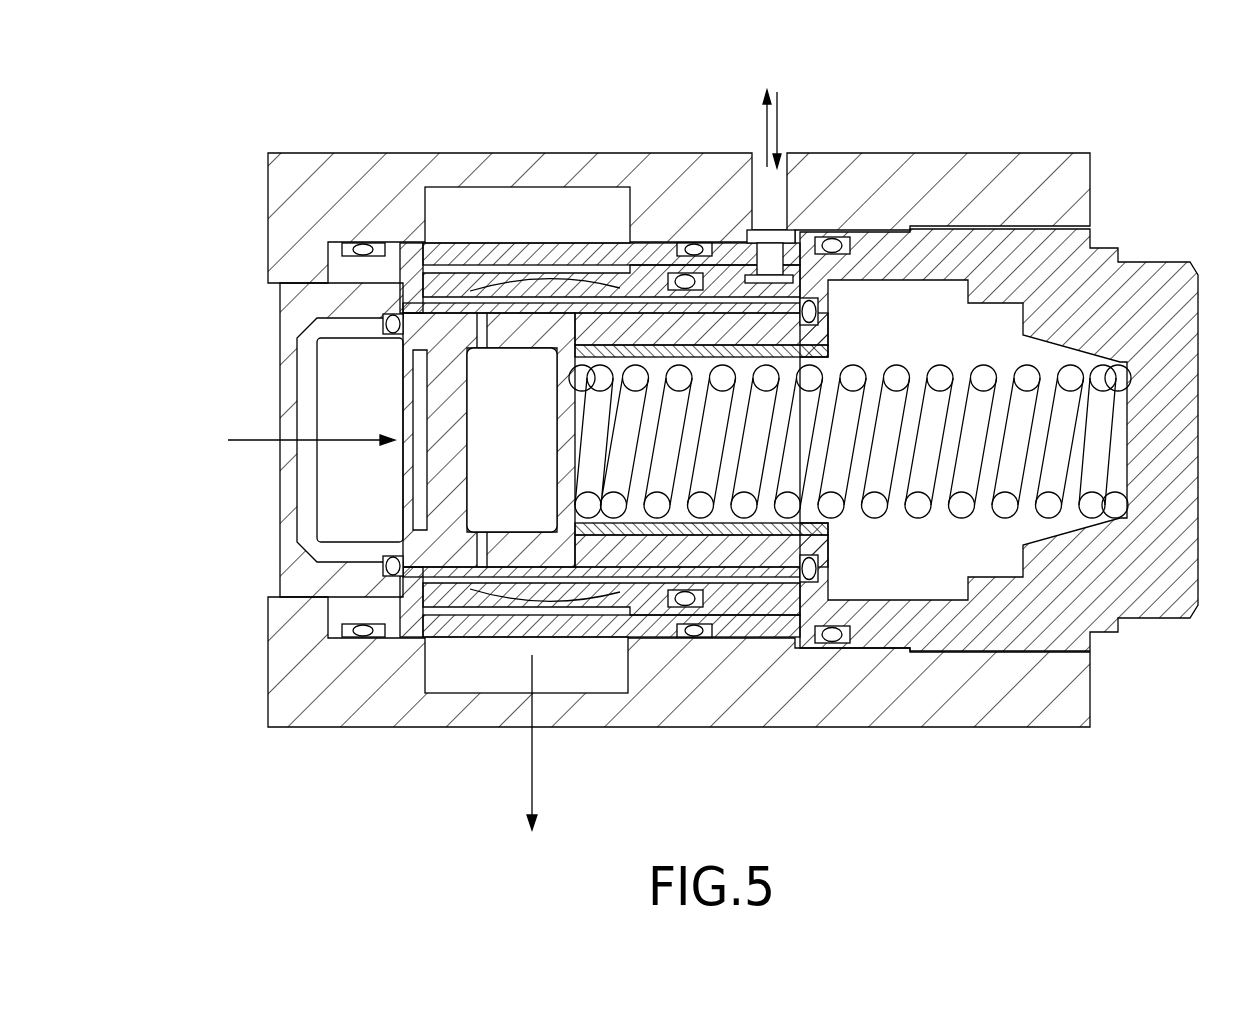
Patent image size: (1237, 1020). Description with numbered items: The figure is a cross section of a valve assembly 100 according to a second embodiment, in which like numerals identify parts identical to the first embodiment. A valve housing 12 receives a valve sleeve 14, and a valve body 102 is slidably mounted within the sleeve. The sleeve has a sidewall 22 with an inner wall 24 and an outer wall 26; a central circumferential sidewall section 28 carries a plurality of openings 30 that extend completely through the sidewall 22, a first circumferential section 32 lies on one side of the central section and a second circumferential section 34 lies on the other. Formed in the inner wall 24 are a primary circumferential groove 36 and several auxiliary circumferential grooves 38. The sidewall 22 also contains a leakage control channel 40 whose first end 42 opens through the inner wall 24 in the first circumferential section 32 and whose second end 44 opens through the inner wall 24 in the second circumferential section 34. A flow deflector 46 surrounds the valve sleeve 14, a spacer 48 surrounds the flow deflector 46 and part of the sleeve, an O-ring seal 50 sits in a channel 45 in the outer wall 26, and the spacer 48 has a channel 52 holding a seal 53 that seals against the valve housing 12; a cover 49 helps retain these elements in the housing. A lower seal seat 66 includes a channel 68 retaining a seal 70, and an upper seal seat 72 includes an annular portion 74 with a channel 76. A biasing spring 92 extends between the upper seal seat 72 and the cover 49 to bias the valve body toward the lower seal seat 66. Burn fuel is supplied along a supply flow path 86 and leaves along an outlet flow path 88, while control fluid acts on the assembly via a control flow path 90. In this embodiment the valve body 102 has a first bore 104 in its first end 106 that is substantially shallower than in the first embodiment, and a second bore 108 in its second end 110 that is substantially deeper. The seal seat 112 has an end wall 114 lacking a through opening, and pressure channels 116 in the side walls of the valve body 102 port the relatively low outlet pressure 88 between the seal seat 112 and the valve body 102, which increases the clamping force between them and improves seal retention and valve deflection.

The valve housing 12 is at (1030, 175).
The valve sleeve 14 is at (615, 283).
The sidewall 22 is at (490, 283).
The inner wall 24 is at (423, 373).
The outer wall 26 is at (430, 265).
The central circumferential sidewall section 28 is at (517, 593).
The openings 30 is at (468, 583).
The first circumferential section 32 is at (437, 597).
The second circumferential section 34 is at (668, 585).
The primary circumferential groove 36 is at (650, 590).
The auxiliary circumferential grooves 38 is at (748, 583).
The leakage control channel 40 is at (537, 300).
The first end 42 is at (432, 592).
The second end 44 is at (613, 590).
The channel 45 is at (655, 285).
The flow deflector 46 is at (440, 278).
The spacer 48 is at (522, 262).
The cover 49 is at (885, 255).
The O-ring seal 50 is at (673, 290).
The channel 52 is at (765, 272).
The seal 53 is at (705, 290).
The lower seal seat 66 is at (333, 573).
The channel 68 is at (333, 630).
The seal 70 is at (393, 558).
The upper seal seat 72 is at (783, 535).
The annular portion 74 is at (827, 570).
The channel 76 is at (827, 593).
The supply flow path 86 is at (247, 437).
The outlet flow path 88 is at (530, 775).
The control flow path 90 is at (767, 111).
The biasing spring 92 is at (963, 508).
The valve assembly 100 is at (845, 120).
The valve body 102 is at (555, 296).
The first bore 104 is at (425, 360).
The first end 106 is at (352, 312).
The second bore 108 is at (525, 348).
The second end 110 is at (797, 322).
The seal seat 112 is at (817, 340).
The end wall 114 is at (562, 443).
The pressure channels 116 is at (482, 538).